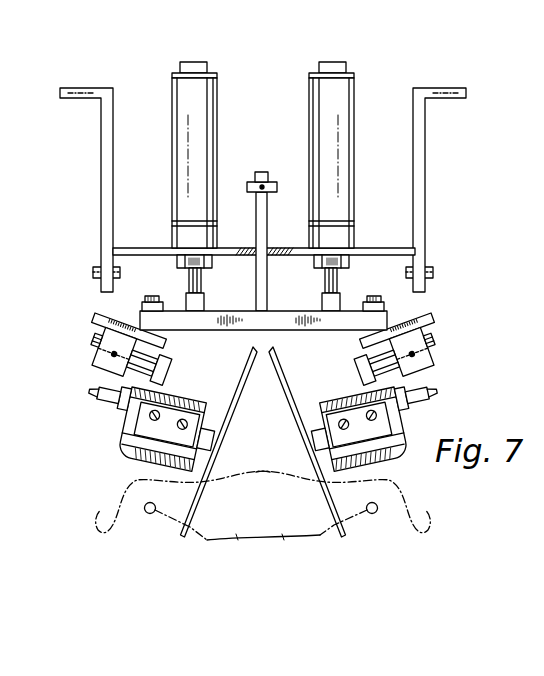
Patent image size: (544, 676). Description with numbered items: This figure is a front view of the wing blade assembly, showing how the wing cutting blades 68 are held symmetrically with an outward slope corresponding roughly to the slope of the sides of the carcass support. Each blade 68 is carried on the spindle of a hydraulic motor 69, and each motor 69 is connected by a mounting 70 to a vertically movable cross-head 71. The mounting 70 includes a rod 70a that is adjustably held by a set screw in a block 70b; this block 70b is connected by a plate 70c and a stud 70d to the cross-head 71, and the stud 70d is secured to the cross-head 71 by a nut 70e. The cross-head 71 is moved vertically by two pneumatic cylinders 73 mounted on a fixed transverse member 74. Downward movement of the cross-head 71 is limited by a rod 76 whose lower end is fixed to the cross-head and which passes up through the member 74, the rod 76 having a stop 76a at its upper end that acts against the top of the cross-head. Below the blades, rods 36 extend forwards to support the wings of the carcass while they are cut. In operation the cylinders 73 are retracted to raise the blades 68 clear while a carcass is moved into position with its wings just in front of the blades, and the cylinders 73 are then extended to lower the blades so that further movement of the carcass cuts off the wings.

The rods 36 is at (144, 506).
The wing cutting blades 68 is at (279, 403).
The hydraulic motor 69 is at (126, 410).
The mounting 70 is at (164, 373).
The rod 70a is at (92, 350).
The block 70b is at (110, 333).
The plate 70c is at (96, 312).
The stud 70d is at (152, 296).
The nut 70e is at (142, 305).
The cross-head 71 is at (318, 323).
The pneumatic cylinders 73 is at (323, 114).
The fixed transverse member 74 is at (384, 250).
The rod 76 is at (268, 216).
The stop 76a is at (272, 184).